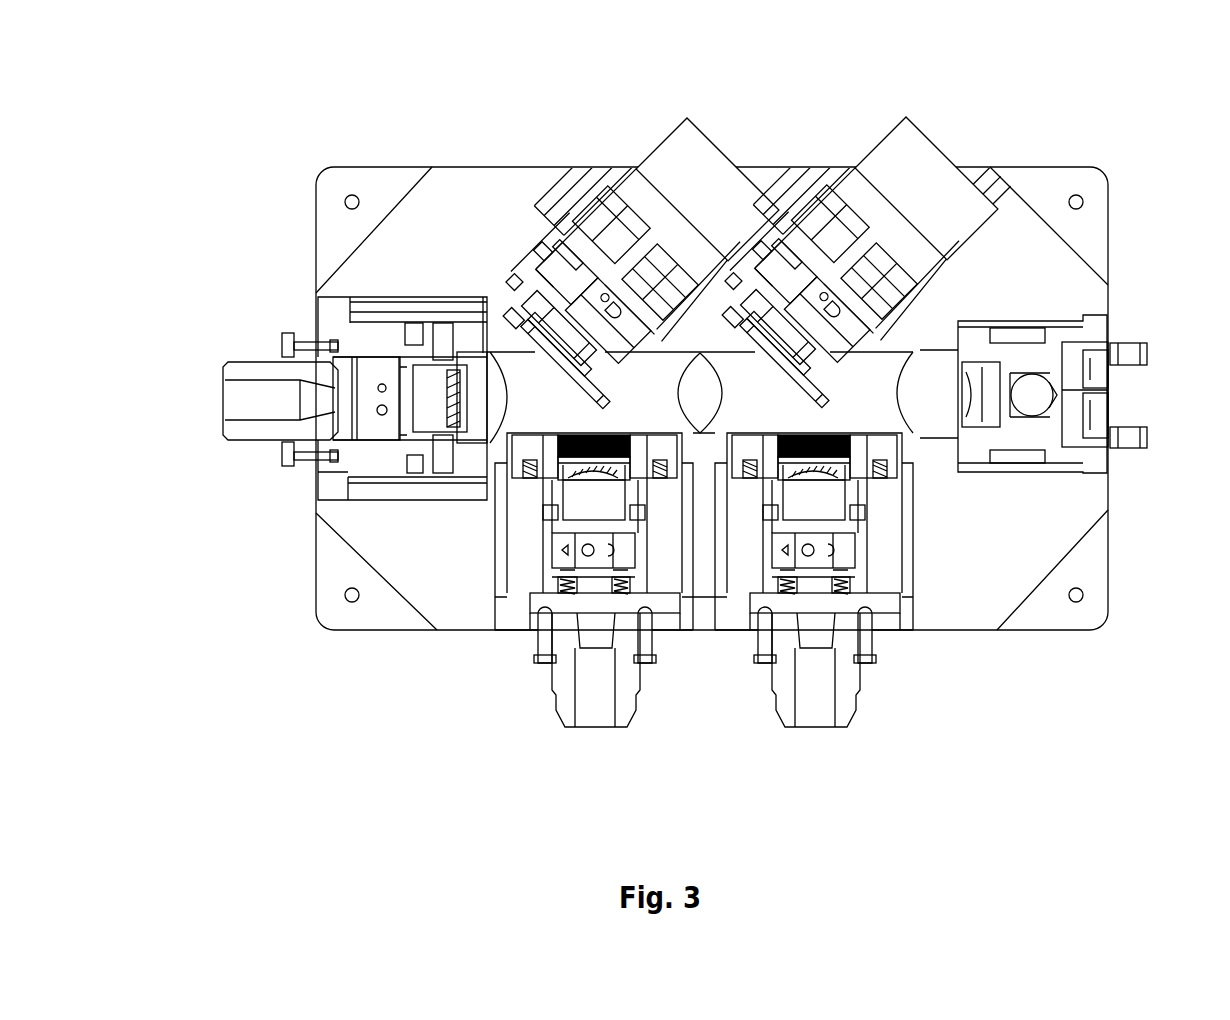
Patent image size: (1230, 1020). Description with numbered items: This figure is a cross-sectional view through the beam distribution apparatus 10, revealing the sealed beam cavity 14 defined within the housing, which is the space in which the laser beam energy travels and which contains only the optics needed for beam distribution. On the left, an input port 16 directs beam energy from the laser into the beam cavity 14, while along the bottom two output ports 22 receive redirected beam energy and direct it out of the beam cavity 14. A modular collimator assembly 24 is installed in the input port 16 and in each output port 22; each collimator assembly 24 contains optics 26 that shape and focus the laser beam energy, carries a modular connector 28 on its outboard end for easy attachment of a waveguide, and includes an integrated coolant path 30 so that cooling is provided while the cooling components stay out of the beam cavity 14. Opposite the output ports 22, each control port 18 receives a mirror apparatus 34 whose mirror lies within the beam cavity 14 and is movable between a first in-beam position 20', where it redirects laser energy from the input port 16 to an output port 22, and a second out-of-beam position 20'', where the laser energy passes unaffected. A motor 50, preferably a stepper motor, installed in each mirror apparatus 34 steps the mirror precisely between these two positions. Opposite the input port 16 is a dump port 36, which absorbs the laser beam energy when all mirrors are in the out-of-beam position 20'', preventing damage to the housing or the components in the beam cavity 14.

The beam distribution apparatus 10 is at (1153, 101).
The beam cavity 14 is at (722, 473).
The input port 16 is at (317, 298).
The control port 18 is at (605, 177).
The in-beam position 20' is at (593, 364).
The out-of-beam position 20'' is at (816, 363).
The output port 22 is at (513, 612).
The collimator assembly 24 is at (325, 482).
The optics 26 is at (450, 402).
The modular connector 28 is at (225, 373).
The coolant path 30 is at (763, 517).
The mirror apparatus 34 is at (748, 120).
The dump port 36 is at (1110, 315).
The motor 50 is at (693, 138).